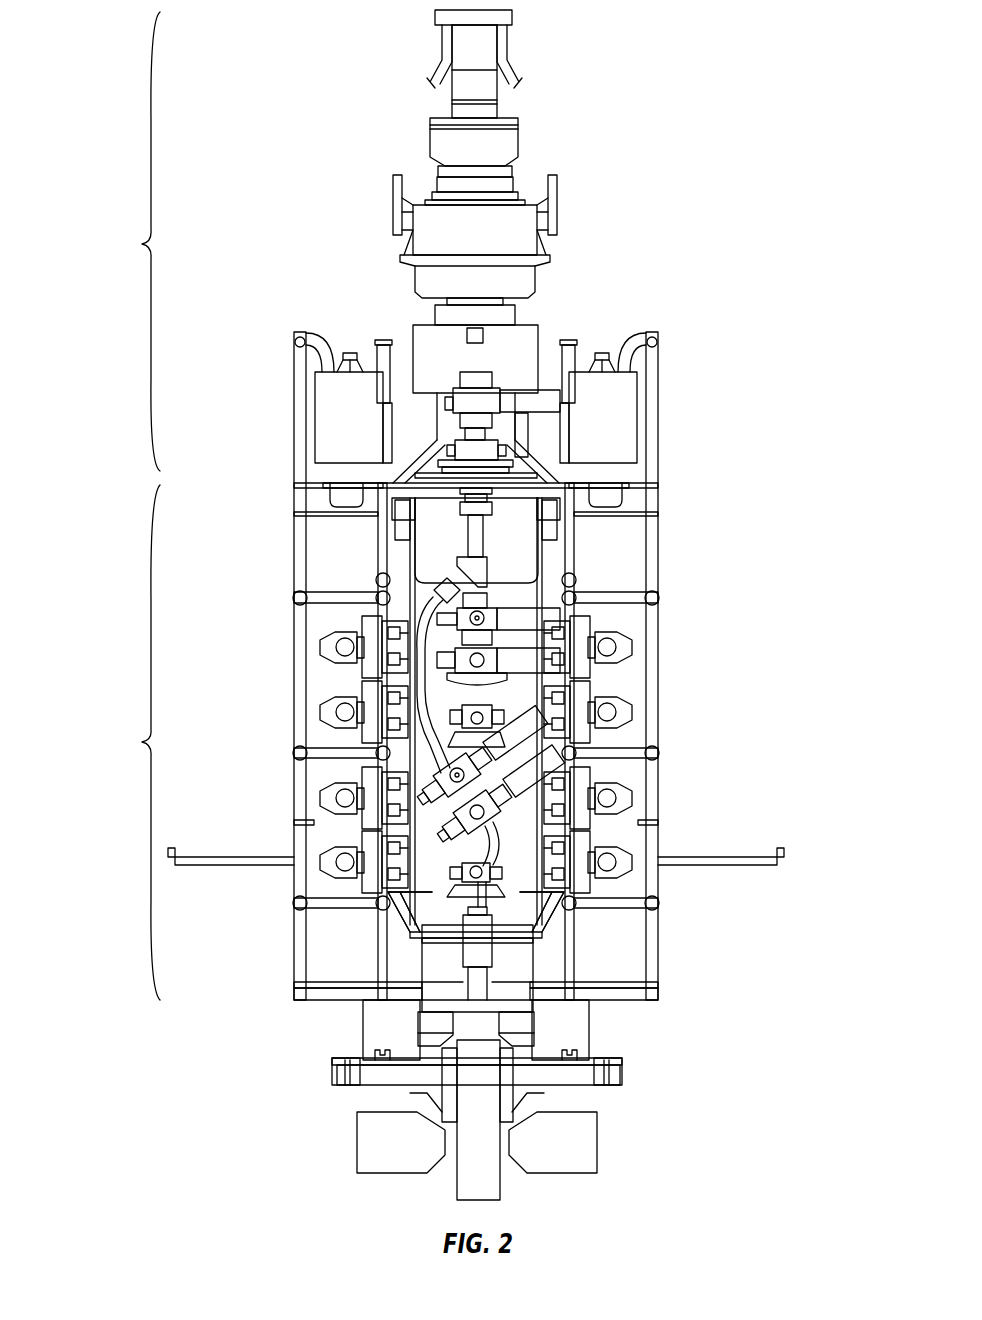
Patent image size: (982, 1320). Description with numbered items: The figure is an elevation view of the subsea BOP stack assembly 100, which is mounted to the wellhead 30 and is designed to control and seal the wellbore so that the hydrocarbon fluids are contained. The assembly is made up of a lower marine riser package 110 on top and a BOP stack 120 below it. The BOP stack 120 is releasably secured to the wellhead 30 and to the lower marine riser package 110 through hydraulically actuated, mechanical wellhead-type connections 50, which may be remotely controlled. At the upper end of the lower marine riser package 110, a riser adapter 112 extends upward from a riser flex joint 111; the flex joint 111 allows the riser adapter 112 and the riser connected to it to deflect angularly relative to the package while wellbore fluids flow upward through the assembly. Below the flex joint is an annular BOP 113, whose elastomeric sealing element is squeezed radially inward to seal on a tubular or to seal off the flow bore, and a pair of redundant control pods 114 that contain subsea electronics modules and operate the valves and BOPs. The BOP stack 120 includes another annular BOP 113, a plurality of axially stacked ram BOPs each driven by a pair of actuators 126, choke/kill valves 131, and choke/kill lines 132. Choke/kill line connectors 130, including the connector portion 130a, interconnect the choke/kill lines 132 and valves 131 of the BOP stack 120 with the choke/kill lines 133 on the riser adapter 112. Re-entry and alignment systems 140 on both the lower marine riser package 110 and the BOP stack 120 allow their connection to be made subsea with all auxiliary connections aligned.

The wellhead 30 is at (452, 1078).
The connection 50 is at (515, 345).
The BOP stack assembly 100 is at (130, 532).
The lower marine riser package 110 is at (128, 241).
The riser flex joint 111 is at (503, 143).
The riser adapter 112 is at (482, 90).
The annular BOP 113 is at (515, 230).
The control pod 114 is at (345, 410).
The BOP stack 120 is at (128, 742).
The actuator 126 is at (327, 645).
The choke/kill line connector 130 is at (483, 948).
The conduit fitting 130a is at (470, 452).
The choke/kill valve 131 is at (442, 618).
The choke/kill line 132 is at (476, 533).
The choke/kill line 133 is at (504, 62).
The re-entry and alignment system 140 is at (598, 458).